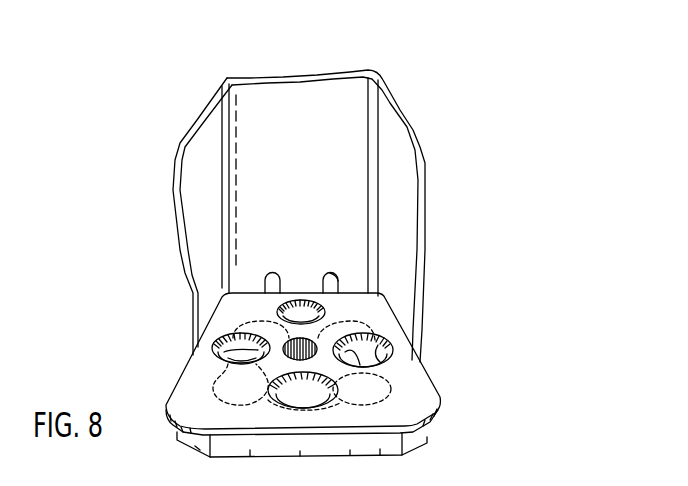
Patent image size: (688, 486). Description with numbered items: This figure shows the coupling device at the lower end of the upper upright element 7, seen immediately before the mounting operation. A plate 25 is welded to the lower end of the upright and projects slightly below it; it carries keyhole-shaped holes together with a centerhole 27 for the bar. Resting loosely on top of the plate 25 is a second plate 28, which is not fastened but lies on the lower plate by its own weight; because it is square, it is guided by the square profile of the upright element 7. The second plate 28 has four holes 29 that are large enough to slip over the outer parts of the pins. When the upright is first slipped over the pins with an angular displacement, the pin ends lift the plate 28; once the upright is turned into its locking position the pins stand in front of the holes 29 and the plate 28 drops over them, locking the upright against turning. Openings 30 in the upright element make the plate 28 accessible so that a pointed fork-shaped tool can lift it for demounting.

The upper upright element 7 is at (372, 67).
The plate 25 is at (415, 437).
The centerhole 27 is at (317, 343).
The second plate 28 is at (407, 382).
The holes 29 is at (388, 340).
The openings 30 is at (338, 285).